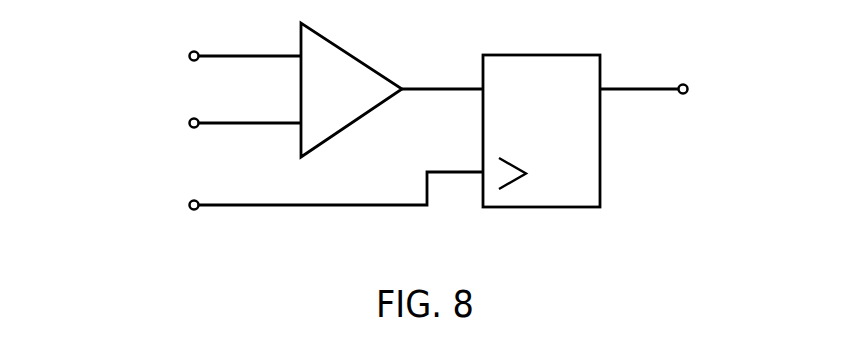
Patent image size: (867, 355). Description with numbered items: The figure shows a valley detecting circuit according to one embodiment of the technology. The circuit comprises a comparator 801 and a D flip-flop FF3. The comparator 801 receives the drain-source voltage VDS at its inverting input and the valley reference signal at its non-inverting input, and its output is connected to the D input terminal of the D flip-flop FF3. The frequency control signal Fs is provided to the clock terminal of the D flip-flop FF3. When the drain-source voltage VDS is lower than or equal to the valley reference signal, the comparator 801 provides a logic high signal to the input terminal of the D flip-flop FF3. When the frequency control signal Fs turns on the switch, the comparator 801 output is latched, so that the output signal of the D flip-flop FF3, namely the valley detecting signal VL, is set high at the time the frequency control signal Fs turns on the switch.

The comparator 801 is at (390, 48).
The D flip-flop FF3 is at (541, 115).
The drain-source voltage VDS is at (211, 57).
The frequency control signal Fs is at (310, 196).
The valley detecting signal VL is at (680, 91).